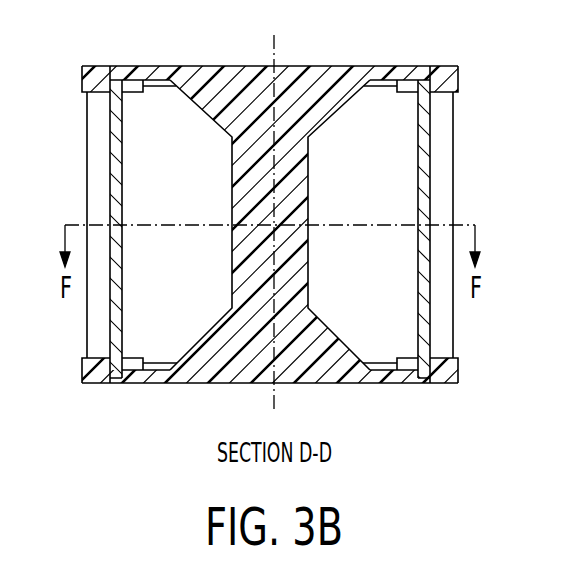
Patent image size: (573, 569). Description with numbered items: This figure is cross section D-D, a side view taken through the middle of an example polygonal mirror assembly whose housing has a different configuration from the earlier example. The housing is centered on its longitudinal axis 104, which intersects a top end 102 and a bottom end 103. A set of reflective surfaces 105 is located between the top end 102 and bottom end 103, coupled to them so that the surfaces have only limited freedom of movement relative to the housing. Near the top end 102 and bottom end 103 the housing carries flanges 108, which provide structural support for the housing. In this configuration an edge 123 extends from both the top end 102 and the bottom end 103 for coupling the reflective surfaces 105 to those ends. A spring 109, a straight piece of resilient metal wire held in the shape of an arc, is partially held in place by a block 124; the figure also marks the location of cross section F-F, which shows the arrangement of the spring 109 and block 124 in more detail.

The top end 102 is at (387, 65).
The bottom end 103 is at (386, 384).
The longitudinal axis 104 is at (278, 48).
The reflective surfaces 105 is at (92, 207).
The flanges 108 is at (210, 122).
The spring 109 is at (157, 84).
The edge 123 is at (90, 79).
The block 124 is at (130, 90).